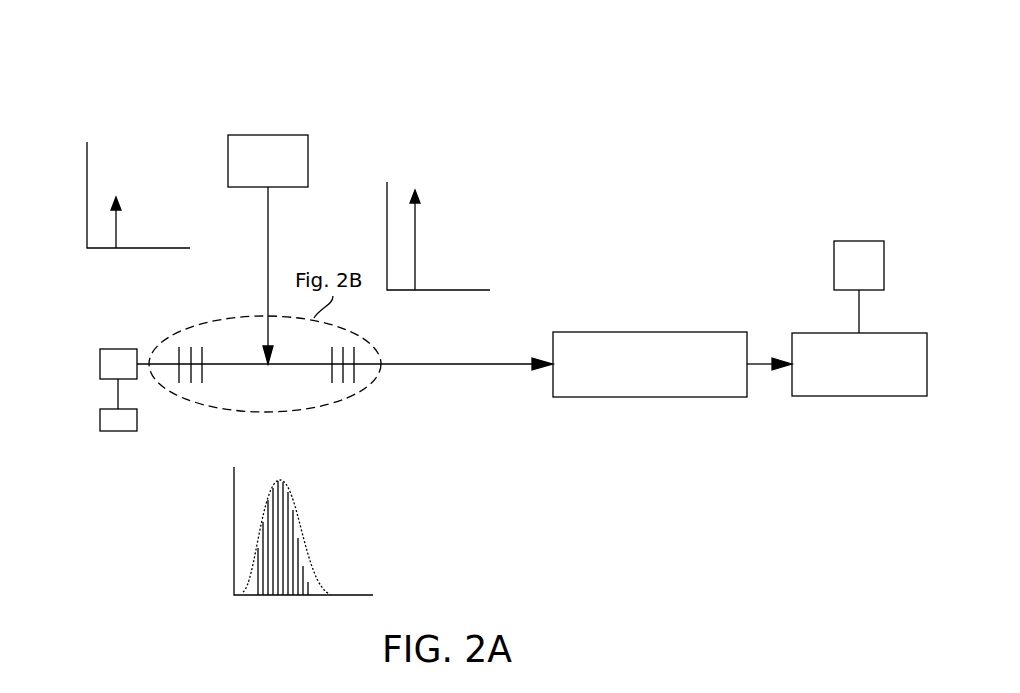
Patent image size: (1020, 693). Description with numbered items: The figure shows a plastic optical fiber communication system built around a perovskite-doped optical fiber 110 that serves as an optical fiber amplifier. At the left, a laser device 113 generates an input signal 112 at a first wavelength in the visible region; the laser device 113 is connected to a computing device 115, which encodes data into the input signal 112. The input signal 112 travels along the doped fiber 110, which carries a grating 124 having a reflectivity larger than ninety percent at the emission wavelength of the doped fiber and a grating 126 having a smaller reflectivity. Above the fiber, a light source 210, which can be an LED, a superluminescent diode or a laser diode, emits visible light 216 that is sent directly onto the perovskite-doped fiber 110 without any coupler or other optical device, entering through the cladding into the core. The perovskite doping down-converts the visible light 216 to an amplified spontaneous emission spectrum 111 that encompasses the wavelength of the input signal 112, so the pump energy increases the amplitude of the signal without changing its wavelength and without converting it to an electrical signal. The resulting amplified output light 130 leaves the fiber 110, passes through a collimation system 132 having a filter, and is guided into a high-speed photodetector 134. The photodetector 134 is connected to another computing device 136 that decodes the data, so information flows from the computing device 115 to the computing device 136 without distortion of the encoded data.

The perovskite-doped optical fiber 110 is at (290, 366).
The amplified spontaneous emission spectrum 111 is at (232, 543).
The input signal 112 is at (78, 217).
The laser device 113 is at (100, 366).
The computing device 115 is at (100, 421).
The grating 124 is at (178, 377).
The grating 126 is at (354, 376).
The amplified output light 130 is at (430, 237).
The collimation system 132 is at (648, 397).
The high-speed photodetector 134 is at (860, 396).
The computing device 136 is at (834, 264).
The light source 210 is at (288, 177).
The visible light 216 is at (267, 279).